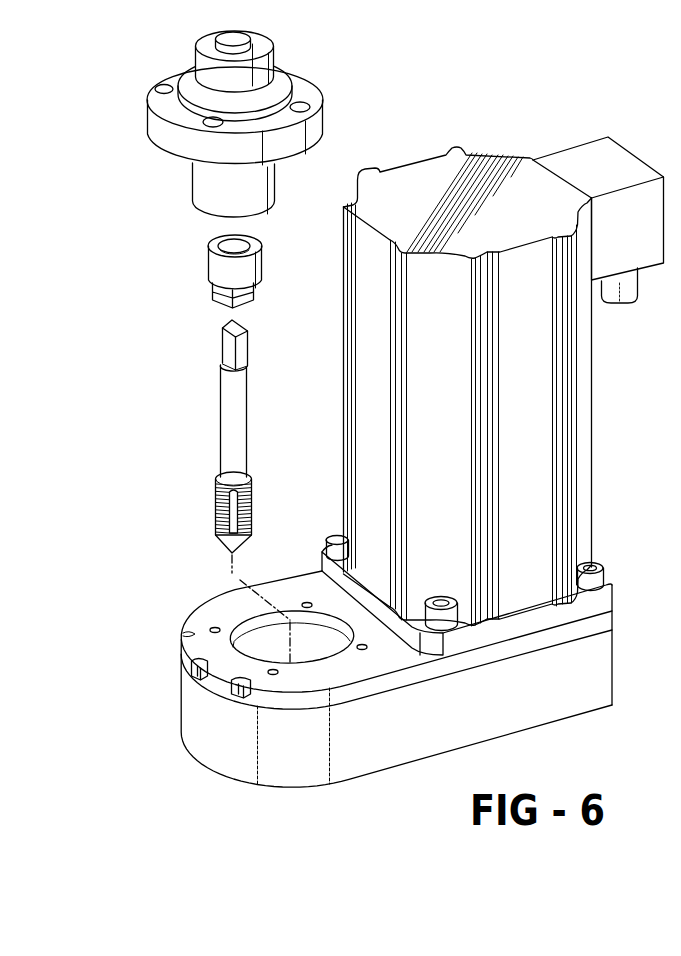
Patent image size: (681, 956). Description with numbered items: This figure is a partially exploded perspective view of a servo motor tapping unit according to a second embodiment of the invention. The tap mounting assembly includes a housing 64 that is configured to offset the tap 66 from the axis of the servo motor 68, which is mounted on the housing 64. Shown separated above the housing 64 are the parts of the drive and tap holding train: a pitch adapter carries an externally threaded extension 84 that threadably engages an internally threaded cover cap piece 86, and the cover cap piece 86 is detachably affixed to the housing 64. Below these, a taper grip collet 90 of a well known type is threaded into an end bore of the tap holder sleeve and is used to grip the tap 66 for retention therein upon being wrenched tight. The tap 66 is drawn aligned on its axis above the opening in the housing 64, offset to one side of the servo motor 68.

The housing 64 is at (200, 698).
The tap 66 is at (215, 500).
The servo motor 68 is at (538, 423).
The externally threaded extension 84 is at (207, 198).
The cover cap piece 86 is at (150, 109).
The taper grip collet 90 is at (213, 270).